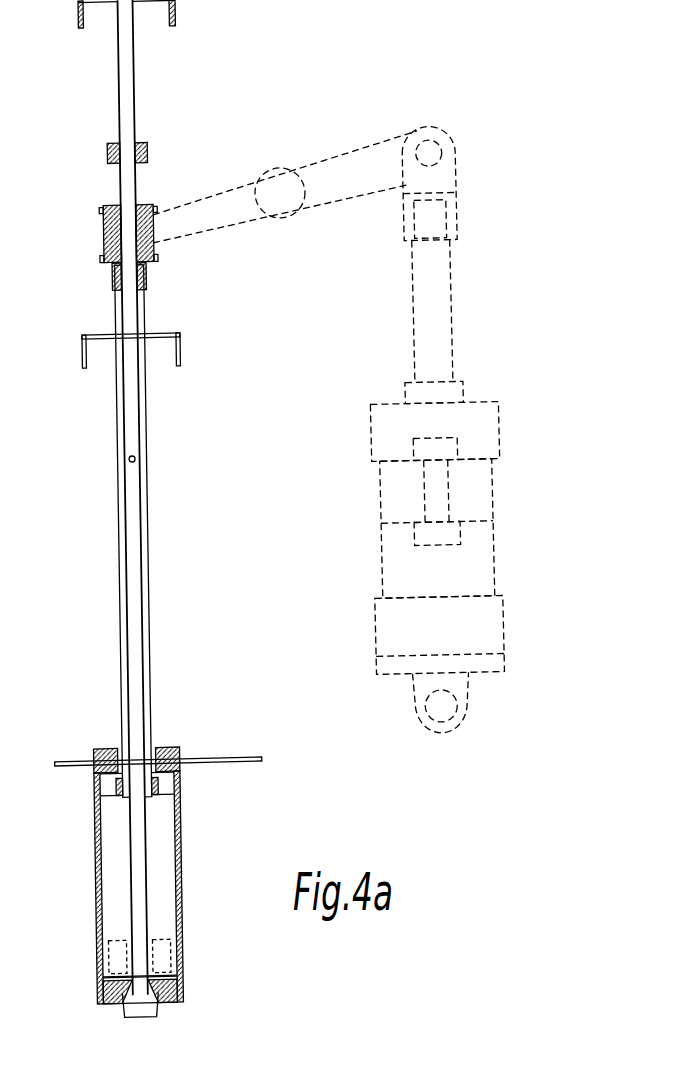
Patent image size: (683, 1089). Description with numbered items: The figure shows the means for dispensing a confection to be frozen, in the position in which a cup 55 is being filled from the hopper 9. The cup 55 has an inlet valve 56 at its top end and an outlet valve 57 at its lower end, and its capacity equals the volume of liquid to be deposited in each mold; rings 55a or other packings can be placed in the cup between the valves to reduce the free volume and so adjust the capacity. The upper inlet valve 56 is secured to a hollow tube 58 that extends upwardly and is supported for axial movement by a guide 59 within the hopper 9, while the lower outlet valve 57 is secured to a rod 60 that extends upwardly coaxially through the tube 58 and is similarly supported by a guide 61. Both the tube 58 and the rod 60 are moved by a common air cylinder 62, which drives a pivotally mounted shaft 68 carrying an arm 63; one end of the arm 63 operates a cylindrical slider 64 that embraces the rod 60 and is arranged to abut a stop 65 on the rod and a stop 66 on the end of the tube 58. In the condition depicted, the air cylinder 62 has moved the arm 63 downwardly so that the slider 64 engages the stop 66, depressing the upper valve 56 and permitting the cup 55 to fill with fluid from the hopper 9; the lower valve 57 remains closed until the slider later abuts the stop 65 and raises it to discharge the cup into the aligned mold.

The hopper 9 is at (215, 768).
The cup 55 is at (168, 868).
The rings 55a is at (165, 954).
The inlet valve 56 is at (106, 793).
The outlet valve 57 is at (88, 996).
The hollow tube 58 is at (140, 666).
The guide 59 is at (174, 356).
The rod 60 is at (140, 564).
The guide 61 is at (175, 28).
The air cylinder 62 is at (377, 569).
The arm 63 is at (238, 222).
The cylindrical slider 64 is at (99, 252).
The stop 65 is at (145, 154).
The stop 66 is at (108, 285).
The pivotally mounted shaft 68 is at (286, 216).